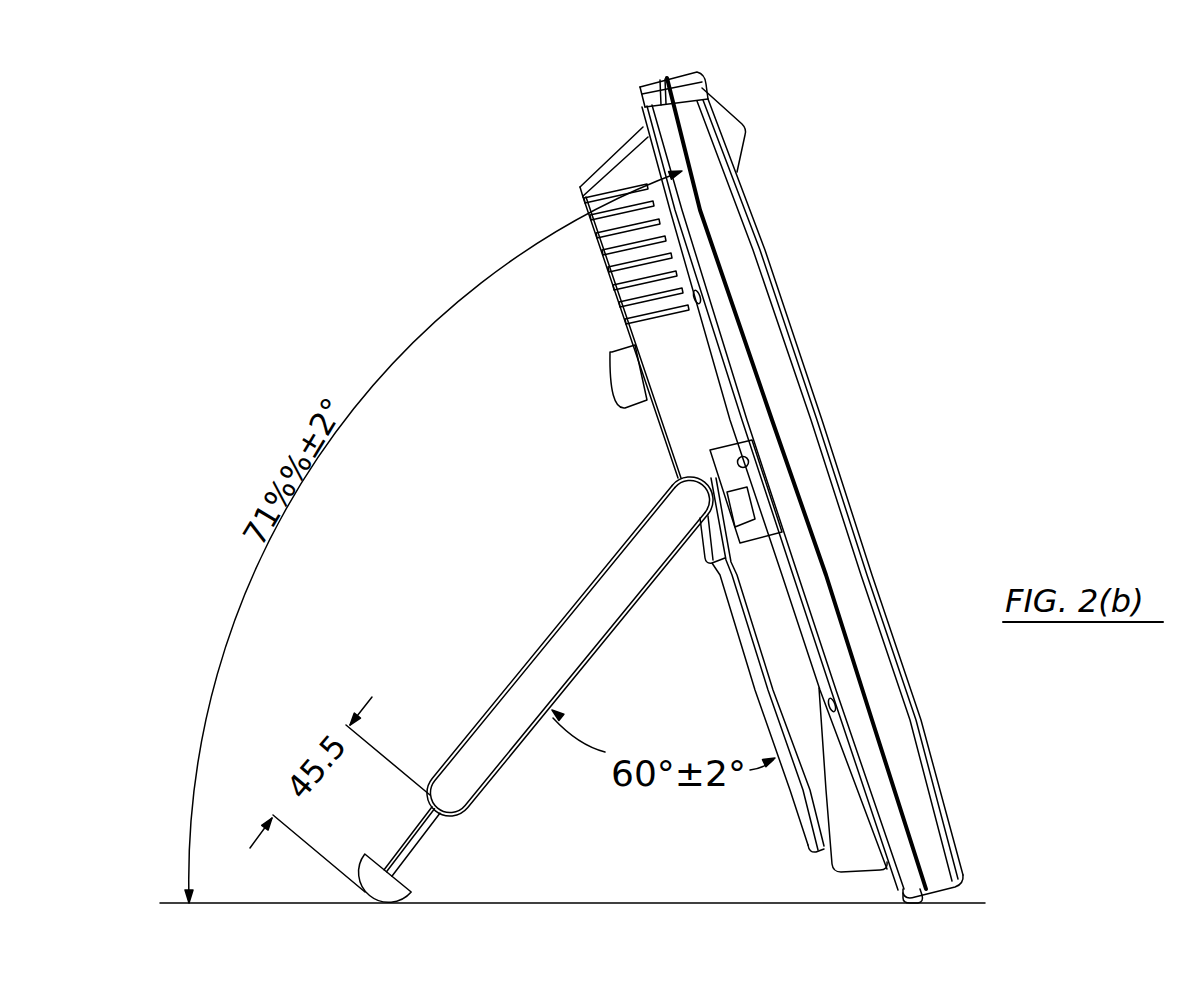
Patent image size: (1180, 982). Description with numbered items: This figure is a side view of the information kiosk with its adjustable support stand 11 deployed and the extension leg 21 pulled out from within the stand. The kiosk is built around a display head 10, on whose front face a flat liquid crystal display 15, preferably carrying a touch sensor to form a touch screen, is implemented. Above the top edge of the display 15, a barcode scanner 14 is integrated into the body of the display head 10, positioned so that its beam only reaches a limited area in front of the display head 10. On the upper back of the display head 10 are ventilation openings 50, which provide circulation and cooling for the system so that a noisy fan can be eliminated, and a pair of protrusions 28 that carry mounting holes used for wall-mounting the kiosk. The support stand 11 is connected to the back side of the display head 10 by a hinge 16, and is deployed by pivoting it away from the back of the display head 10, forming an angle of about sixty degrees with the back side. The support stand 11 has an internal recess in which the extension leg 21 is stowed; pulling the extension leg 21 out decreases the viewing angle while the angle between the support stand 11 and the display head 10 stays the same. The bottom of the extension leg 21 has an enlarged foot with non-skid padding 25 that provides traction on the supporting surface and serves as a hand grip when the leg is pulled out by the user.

The display head 10 is at (635, 64).
The barcode scanner 14 is at (742, 142).
The flat liquid crystal display 15 is at (825, 400).
The ventilation openings 50 is at (615, 252).
The protrusions 28 is at (628, 378).
The hinge 16 is at (678, 507).
The adjustable support stand 11 is at (503, 690).
The extension leg 21 is at (417, 832).
The non-skid padding 25 is at (400, 882).